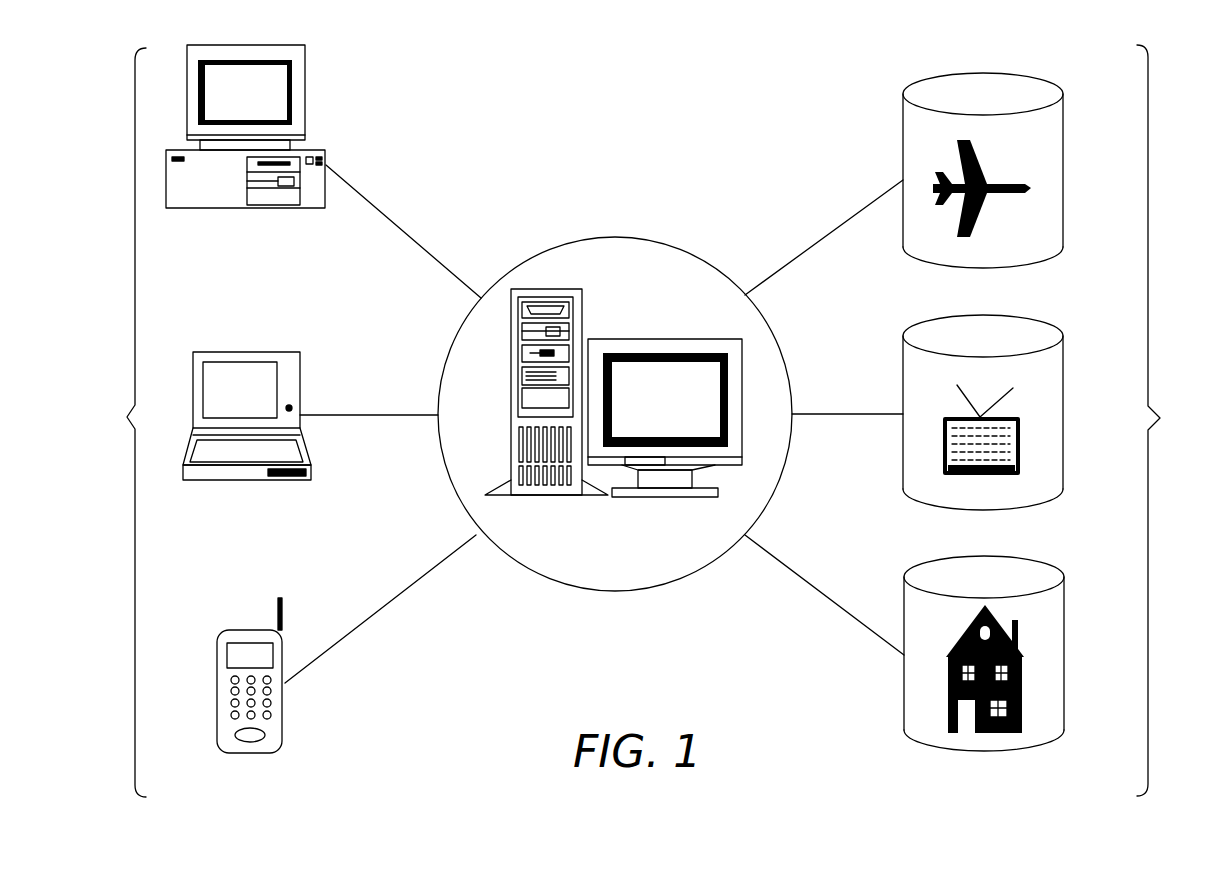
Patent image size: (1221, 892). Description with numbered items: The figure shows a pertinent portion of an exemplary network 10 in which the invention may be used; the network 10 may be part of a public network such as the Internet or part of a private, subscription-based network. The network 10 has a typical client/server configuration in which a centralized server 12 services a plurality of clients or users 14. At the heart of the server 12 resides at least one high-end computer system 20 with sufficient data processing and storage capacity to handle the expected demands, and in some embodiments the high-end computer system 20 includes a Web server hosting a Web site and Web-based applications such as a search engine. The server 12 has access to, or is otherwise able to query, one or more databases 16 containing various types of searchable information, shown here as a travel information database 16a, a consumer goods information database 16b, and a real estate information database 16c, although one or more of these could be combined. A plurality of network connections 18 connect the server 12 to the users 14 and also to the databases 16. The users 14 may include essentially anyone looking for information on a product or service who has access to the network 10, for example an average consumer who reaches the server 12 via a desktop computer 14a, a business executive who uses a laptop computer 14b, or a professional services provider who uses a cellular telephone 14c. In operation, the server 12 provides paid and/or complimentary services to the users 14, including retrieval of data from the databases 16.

The network 10 is at (628, 48).
The server 12 is at (613, 591).
The users 14 is at (114, 422).
The desktop computer 14a is at (243, 208).
The laptop computer 14b is at (245, 480).
The cellular telephone 14c is at (254, 753).
The databases 16 is at (1170, 420).
The travel information database 16a is at (1063, 172).
The consumer goods information database 16b is at (1063, 412).
The real estate information database 16c is at (1064, 655).
The network connections 18 is at (373, 205).
The high-end computer system 20 is at (537, 495).